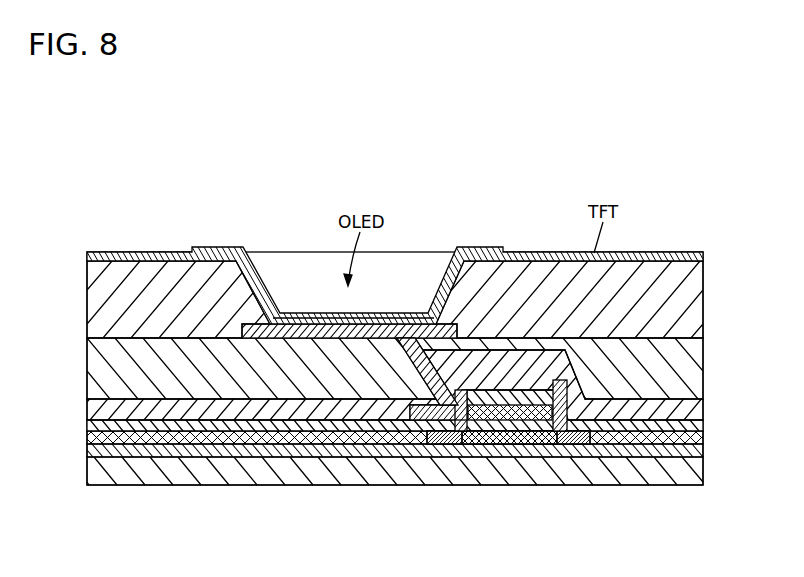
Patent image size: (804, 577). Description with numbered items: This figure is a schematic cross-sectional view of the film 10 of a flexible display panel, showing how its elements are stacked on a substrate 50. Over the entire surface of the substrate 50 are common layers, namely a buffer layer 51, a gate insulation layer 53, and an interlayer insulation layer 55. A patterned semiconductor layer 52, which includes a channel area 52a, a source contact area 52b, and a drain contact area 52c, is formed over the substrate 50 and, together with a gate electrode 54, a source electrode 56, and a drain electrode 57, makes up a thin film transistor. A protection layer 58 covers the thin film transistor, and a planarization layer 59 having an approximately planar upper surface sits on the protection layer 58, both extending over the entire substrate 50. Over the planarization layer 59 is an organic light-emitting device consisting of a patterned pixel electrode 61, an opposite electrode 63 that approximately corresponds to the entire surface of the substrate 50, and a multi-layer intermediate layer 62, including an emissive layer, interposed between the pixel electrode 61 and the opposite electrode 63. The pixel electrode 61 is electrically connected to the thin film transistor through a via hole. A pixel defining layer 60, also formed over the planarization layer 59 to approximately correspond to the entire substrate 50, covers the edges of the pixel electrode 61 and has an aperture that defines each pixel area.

The film 10 is at (692, 203).
The substrate 50 is at (703, 470).
The buffer layer 51 is at (703, 452).
The patterned semiconductor layer 52 is at (530, 490).
The channel area 52a is at (528, 444).
The source contact area 52b is at (578, 444).
The drain contact area 52c is at (436, 444).
The gate insulation layer 53 is at (703, 440).
The gate electrode 54 is at (490, 420).
The interlayer insulation layer 55 is at (703, 425).
The source electrode 56 is at (560, 432).
The drain electrode 57 is at (461, 425).
The protection layer 58 is at (703, 396).
The planarization layer 59 is at (703, 352).
The pixel defining layer 60 is at (703, 306).
The pixel electrode 61 is at (290, 323).
The intermediate layer 62 is at (420, 317).
The opposite electrode 63 is at (203, 247).